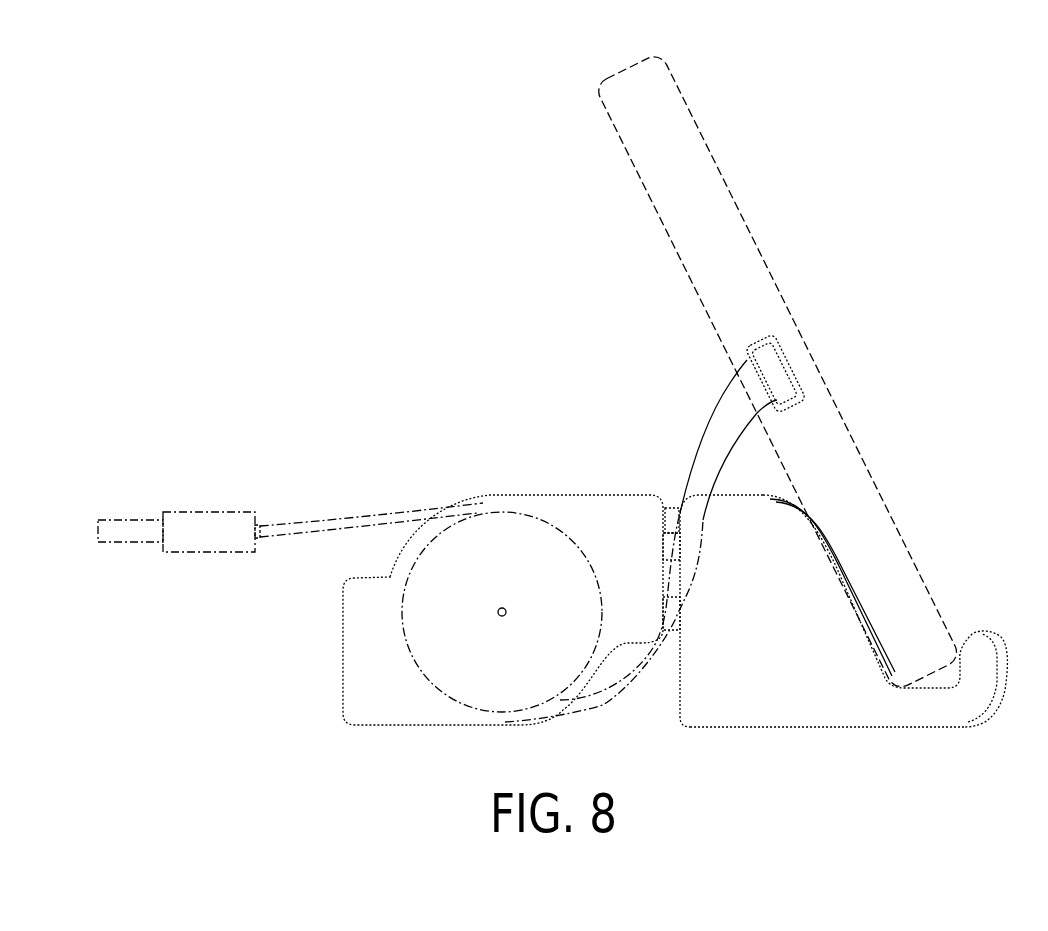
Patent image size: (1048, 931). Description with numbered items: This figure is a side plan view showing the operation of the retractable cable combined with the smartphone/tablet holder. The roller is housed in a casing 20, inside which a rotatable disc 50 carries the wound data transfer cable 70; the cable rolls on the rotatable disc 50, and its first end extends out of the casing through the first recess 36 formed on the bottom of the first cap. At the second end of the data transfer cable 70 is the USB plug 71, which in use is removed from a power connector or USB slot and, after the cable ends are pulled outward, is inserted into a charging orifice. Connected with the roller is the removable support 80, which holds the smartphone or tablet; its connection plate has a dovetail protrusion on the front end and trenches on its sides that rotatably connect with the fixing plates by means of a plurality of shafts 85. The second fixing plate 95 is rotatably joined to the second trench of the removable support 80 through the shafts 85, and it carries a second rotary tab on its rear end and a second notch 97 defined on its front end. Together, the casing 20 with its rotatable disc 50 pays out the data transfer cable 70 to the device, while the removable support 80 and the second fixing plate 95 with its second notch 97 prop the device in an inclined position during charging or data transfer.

The casing 20 is at (517, 487).
The first recess 36 is at (667, 578).
The rotatable disc 50 is at (405, 641).
The data transfer cable 70 is at (344, 522).
The USB plug 71 is at (100, 528).
The removable support 80 is at (868, 602).
The shafts 85 is at (670, 505).
The second fixing plate 95 is at (772, 713).
The second notch 97 is at (905, 686).